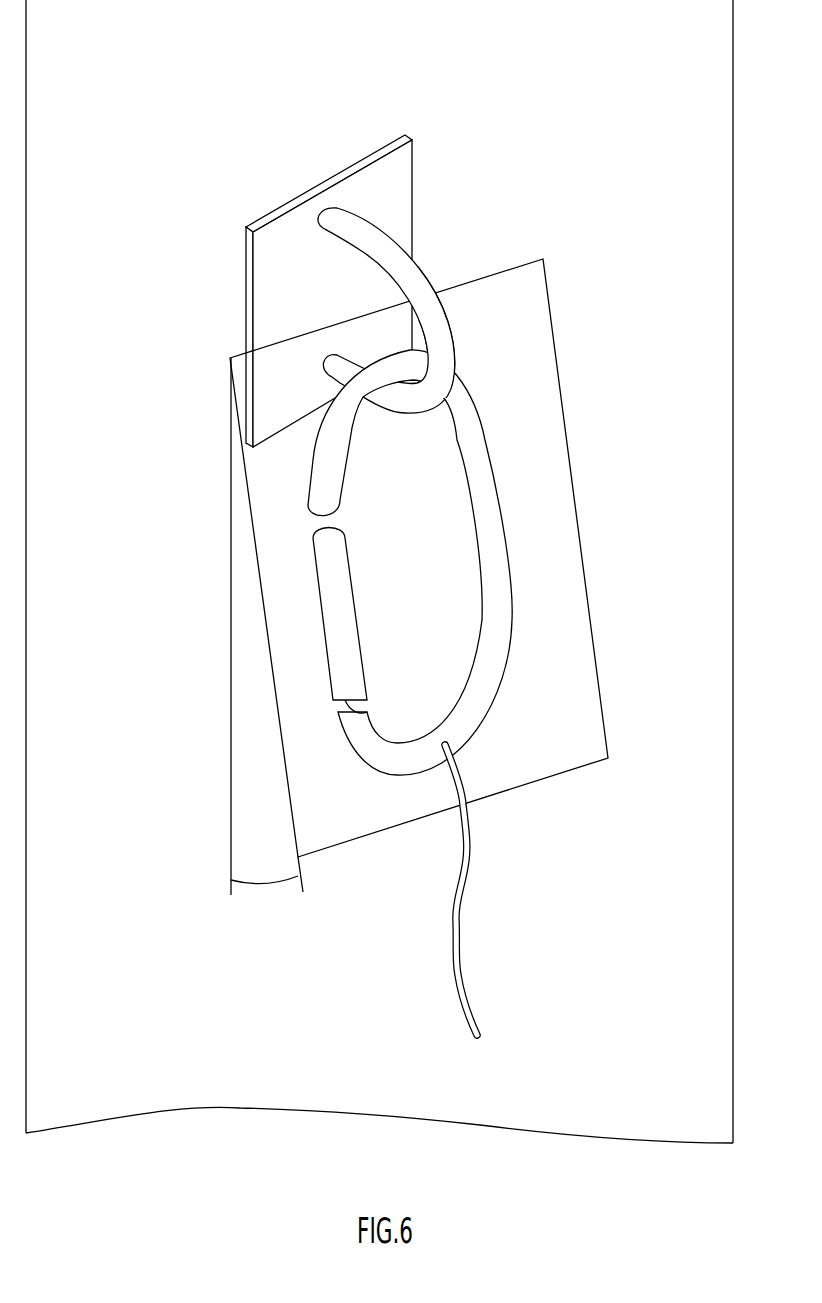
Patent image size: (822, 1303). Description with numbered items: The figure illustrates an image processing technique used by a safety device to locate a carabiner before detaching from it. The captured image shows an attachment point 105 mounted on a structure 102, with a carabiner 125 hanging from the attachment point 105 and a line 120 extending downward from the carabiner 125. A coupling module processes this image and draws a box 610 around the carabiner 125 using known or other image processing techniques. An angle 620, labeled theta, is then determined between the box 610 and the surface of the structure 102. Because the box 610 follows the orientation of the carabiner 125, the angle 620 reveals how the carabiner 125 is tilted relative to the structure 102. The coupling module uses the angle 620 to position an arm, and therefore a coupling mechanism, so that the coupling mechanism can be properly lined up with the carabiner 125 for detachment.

The structure 102 is at (757, 467).
The attachment point 105 is at (412, 193).
The line 120 is at (463, 900).
The carabiner 125 is at (510, 617).
The box 610 is at (557, 355).
The angle 620 is at (231, 828).